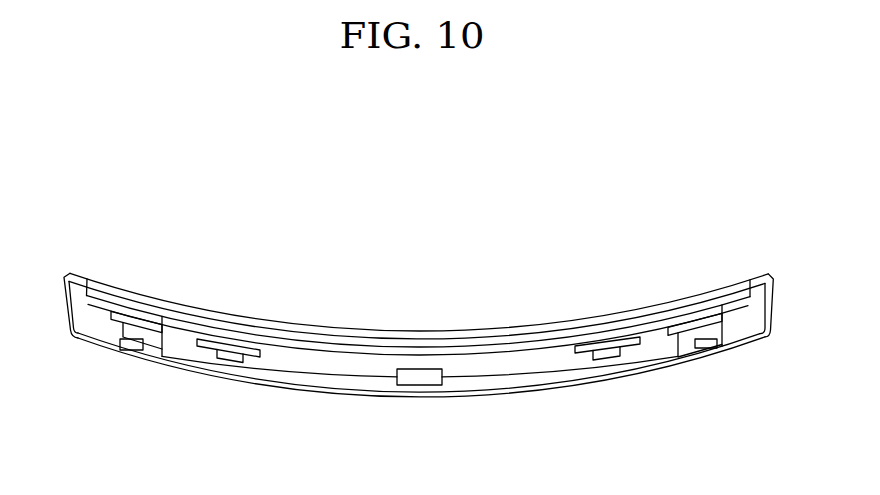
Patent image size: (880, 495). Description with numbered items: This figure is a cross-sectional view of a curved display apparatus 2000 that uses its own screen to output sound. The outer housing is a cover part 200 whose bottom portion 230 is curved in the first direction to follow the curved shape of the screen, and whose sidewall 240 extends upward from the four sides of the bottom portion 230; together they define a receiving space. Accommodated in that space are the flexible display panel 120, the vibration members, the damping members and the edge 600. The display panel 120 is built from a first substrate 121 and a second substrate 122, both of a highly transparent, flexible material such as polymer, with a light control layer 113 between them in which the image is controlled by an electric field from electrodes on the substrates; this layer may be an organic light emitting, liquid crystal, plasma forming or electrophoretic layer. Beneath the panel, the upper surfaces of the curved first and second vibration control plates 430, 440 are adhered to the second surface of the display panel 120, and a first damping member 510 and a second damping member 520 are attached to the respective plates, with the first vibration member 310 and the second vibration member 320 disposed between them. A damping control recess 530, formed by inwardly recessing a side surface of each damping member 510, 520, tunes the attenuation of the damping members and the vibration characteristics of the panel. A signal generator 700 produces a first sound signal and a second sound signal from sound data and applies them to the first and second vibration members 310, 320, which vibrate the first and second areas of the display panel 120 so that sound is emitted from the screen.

The display apparatus 2000 is at (706, 229).
The cover part 200 is at (44, 418).
The bottom portion 230 is at (103, 348).
The sidewall 240 is at (76, 326).
The edge 600 is at (82, 282).
The display panel 120 is at (287, 246).
The second substrate 122 is at (285, 325).
The light control layer 113 is at (328, 340).
The first substrate 121 is at (373, 350).
The first vibration member 310 is at (230, 347).
The second vibration member 320 is at (610, 348).
The first vibration control plate 430 is at (183, 330).
The second vibration control plate 440 is at (655, 332).
The first damping member 510 is at (138, 330).
The second damping member 520 is at (685, 348).
The damping control recess 530 is at (127, 353).
The signal generator 700 is at (421, 378).